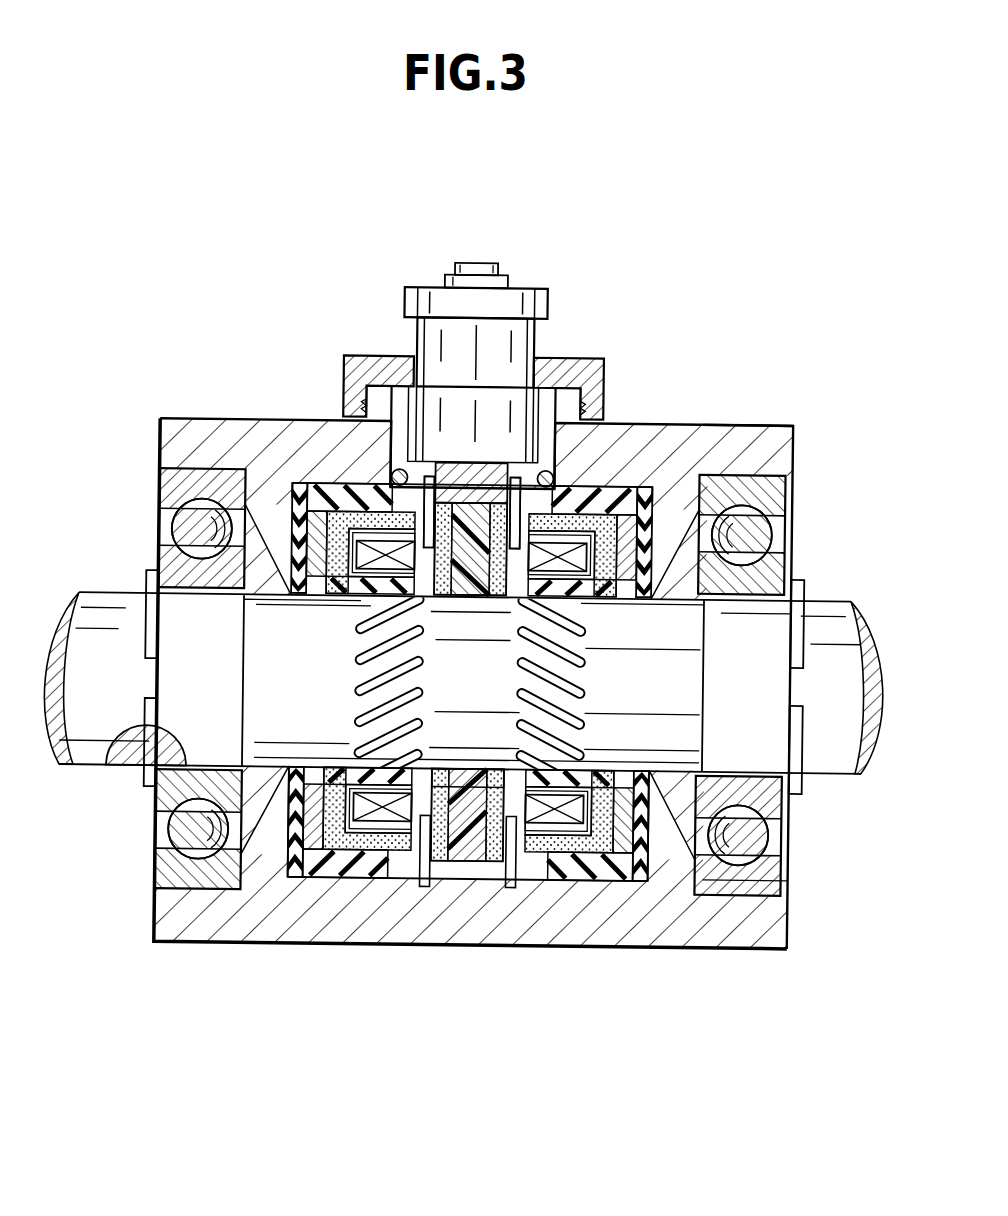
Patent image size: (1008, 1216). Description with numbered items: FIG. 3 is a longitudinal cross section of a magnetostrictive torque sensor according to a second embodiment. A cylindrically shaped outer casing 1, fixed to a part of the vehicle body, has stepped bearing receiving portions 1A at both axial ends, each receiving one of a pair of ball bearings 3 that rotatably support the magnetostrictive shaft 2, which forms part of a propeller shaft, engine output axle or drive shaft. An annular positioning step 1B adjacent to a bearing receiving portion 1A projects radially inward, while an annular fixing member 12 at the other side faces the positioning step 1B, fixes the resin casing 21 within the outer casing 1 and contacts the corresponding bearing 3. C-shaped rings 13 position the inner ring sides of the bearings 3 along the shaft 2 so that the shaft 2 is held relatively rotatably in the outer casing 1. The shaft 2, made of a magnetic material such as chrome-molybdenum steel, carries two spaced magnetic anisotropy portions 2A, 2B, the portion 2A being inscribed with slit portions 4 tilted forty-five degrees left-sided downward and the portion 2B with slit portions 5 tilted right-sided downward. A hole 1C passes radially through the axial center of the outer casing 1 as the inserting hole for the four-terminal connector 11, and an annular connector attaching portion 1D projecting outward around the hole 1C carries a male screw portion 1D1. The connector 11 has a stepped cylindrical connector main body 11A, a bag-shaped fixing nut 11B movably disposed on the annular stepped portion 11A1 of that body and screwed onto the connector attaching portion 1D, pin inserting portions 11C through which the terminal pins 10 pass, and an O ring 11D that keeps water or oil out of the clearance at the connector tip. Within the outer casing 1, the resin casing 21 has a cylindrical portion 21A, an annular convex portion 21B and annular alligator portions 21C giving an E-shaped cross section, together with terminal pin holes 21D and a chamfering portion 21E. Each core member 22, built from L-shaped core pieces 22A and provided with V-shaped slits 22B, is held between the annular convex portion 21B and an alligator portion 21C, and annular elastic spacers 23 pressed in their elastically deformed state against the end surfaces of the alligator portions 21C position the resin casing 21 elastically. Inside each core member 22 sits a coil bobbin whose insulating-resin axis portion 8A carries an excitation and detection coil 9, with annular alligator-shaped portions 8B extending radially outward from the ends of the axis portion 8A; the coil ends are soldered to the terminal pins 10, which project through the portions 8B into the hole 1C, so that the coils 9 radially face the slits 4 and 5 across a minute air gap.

The outer casing 1 is at (791, 427).
The bearing receiving portion 1A is at (195, 482).
The positioning step 1B is at (175, 870).
The hole 1C is at (388, 390).
The connector attaching portion 1D is at (400, 387).
The male screw portion 1D1 is at (555, 385).
The magnetostrictive shaft 2 is at (857, 612).
The magnetic anisotropy portion 2A is at (575, 612).
The magnetic anisotropy portion 2B is at (372, 607).
The ball bearing 3 is at (178, 525).
The slit portion 4 is at (362, 658).
The slit portion 5 is at (578, 660).
The axis portion 8A is at (402, 905).
The annular alligator-shaped portion 8B is at (290, 905).
The excitation and detection coil 9 is at (380, 905).
The terminal pin 10 is at (440, 478).
The four-terminal connector 11 is at (516, 338).
The connector main body 11A is at (428, 288).
The nut 11A1 is at (546, 330).
The fixing nut 11B is at (534, 372).
The pin inserting portion 11C is at (393, 478).
The O ring 11D is at (556, 455).
The fixing member 12 is at (790, 877).
The C-shaped ring 13 is at (150, 778).
The resin casing 21 is at (395, 487).
The cylindrical portion 21A is at (352, 905).
The annular convex portion 21B is at (475, 905).
The annular alligator portion 21C is at (262, 920).
The terminal pin hole 21D is at (778, 416).
The chamfering portion 21E is at (428, 476).
The core member 22 is at (385, 490).
The core piece 22A is at (318, 905).
The V-shaped slit 22B is at (380, 470).
The elastic spacer 23 is at (233, 905).